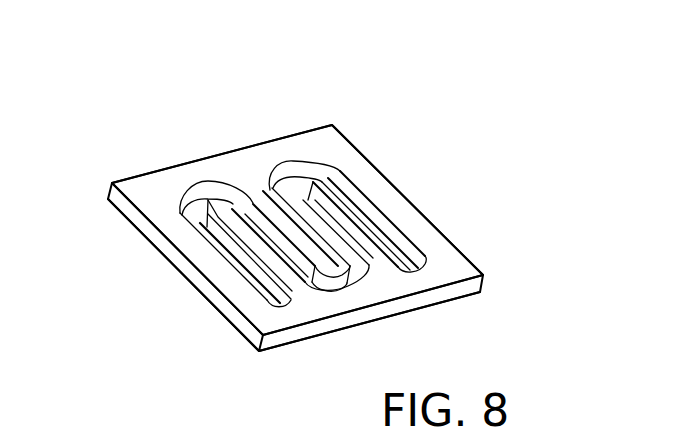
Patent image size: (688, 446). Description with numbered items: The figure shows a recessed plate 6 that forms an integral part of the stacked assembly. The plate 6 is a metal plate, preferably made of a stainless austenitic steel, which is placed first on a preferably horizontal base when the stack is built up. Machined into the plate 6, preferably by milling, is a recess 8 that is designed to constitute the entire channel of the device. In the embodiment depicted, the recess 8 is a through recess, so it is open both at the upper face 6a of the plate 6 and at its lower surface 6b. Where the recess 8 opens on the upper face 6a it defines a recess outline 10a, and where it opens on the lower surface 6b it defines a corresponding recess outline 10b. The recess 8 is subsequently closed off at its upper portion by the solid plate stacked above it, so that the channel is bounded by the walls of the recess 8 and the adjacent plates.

The recessed plate 6 is at (150, 190).
The upper face 6a is at (333, 150).
The lower surface 6b is at (237, 340).
The recess 8 is at (362, 208).
The recess outline 10a is at (203, 228).
The recess outline 10b is at (351, 264).